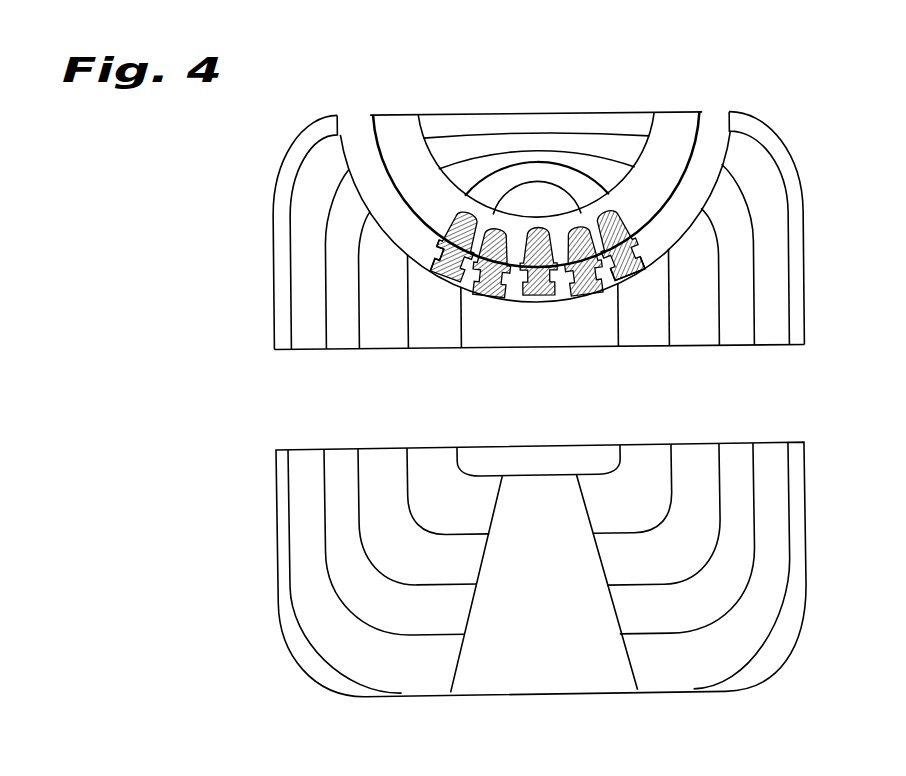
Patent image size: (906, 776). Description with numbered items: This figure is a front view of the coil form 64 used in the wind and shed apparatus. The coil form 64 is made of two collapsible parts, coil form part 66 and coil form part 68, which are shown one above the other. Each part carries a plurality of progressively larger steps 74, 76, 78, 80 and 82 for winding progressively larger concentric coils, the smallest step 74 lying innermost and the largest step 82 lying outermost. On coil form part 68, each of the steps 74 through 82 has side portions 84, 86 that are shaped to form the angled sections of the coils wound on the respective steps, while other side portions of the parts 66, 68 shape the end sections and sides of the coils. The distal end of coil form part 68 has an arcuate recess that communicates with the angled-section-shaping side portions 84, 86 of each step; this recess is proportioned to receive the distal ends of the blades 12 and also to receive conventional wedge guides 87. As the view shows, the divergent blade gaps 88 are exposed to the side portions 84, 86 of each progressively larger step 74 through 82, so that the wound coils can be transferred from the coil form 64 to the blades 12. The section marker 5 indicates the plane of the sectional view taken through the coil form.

The section line 5- 5 is at (537, 72).
The blades 12 is at (613, 219).
The coil form 64 is at (242, 417).
The coil form part 66 is at (262, 483).
The coil form part 68 is at (757, 83).
The step 74 is at (617, 310).
The step 76 is at (672, 298).
The step 78 is at (718, 294).
The step 80 is at (752, 298).
The step 82 is at (785, 298).
The side portion 84 is at (404, 128).
The side portion 86 is at (606, 293).
The wedge guides 87 is at (440, 262).
The divergent blade gaps 88 is at (553, 223).